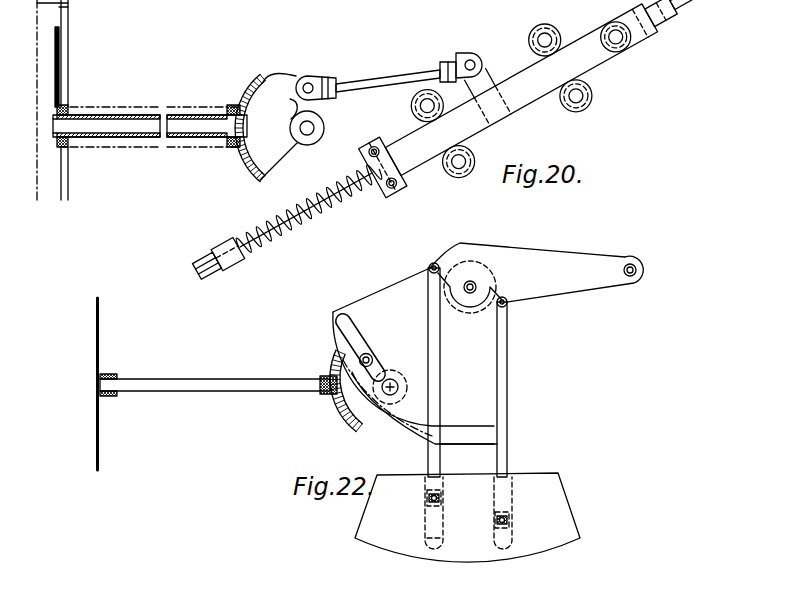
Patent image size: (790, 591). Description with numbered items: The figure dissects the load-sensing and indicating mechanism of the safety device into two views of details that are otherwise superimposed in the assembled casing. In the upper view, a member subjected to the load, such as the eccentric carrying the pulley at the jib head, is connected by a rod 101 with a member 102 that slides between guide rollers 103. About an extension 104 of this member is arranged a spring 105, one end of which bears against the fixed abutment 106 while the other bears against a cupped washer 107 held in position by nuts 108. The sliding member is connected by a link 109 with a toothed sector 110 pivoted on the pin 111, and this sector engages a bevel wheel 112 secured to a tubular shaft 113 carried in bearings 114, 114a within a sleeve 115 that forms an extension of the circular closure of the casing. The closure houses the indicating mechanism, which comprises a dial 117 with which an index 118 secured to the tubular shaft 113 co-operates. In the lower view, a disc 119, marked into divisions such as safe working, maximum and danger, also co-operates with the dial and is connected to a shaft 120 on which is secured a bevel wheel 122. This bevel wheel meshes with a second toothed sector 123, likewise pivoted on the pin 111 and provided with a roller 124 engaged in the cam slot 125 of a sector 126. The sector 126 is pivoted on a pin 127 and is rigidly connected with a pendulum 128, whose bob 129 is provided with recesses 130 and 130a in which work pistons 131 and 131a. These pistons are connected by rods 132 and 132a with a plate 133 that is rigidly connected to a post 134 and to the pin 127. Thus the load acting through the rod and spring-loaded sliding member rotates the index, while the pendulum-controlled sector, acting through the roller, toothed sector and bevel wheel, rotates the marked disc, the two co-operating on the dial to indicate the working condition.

In FIG. 20, the rod 101 is at (665, 8).
In FIG. 20, the member 102 is at (533, 90).
In FIG. 20, the guide rollers 103 is at (457, 158).
In FIG. 20, the extension 104 is at (306, 210).
In FIG. 20, the spring 105 is at (309, 209).
In FIG. 20, the fixed abutment 106 is at (382, 146).
In FIG. 20, the cupped washer 107 is at (244, 266).
In FIG. 20, the nuts 108 is at (233, 266).
In FIG. 20, the link 109 is at (404, 78).
In FIG. 20, the toothed sector 110 is at (263, 96).
In FIG. 20, the pin 111 is at (307, 128).
In FIG. 22, the pin 111 is at (388, 390).
In FIG. 20, the bevel wheel 112 is at (246, 98).
In FIG. 20, the tubular shaft 113 is at (169, 112).
In FIG. 20, the bearing 114 is at (232, 107).
In FIG. 20, the bearing 114a is at (68, 108).
In FIG. 20, the sleeve 115 is at (155, 148).
In FIG. 20, the dial 117 is at (61, 25).
In FIG. 20, the index 118 is at (60, 60).
In FIG. 22, the disc 119 is at (98, 304).
In FIG. 22, the shaft 120 is at (207, 385).
In FIG. 22, the bevel wheel 122 is at (337, 397).
In FIG. 22, the toothed sector 123 is at (339, 372).
In FIG. 22, the roller 124 is at (370, 358).
In FIG. 22, the cam slot 125 is at (343, 321).
In FIG. 22, the sector 126 is at (398, 297).
In FIG. 22, the pin 127 is at (475, 285).
In FIG. 22, the pendulum 128 is at (487, 465).
In FIG. 22, the bob 129 is at (558, 478).
In FIG. 22, the recess 130 is at (512, 497).
In FIG. 22, the recess 130a is at (434, 546).
In FIG. 22, the piston 131 is at (513, 518).
In FIG. 22, the piston 131a is at (428, 497).
In FIG. 22, the rod 132 is at (500, 402).
In FIG. 22, the rod 132a is at (430, 357).
In FIG. 22, the plate 133 is at (547, 287).
In FIG. 22, the post 134 is at (632, 286).